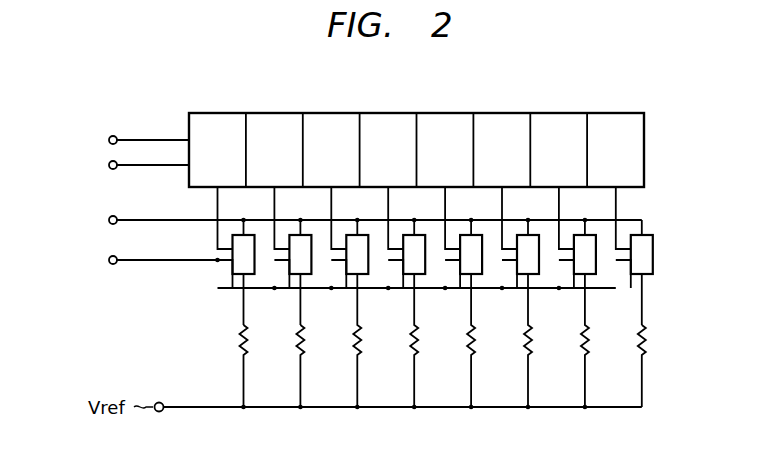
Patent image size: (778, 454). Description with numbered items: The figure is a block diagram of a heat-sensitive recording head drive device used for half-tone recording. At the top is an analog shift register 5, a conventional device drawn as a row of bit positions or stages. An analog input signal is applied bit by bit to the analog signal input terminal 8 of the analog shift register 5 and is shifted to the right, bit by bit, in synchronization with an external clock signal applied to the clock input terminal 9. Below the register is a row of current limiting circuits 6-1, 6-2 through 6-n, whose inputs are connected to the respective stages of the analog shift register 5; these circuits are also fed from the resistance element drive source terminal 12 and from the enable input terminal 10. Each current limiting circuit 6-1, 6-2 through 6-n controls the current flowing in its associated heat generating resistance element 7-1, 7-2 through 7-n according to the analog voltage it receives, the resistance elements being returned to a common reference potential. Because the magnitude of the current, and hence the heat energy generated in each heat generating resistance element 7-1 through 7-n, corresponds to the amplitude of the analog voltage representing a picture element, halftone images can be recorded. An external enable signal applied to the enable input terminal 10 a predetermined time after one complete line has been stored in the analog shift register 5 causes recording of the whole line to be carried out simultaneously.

The analog shift register 5 is at (559, 112).
The analog signal input terminal 8 is at (108, 140).
The clock input terminal 9 is at (108, 165).
The enable input terminal 10 is at (108, 260).
The resistance element drive source terminal 12 is at (108, 220).
The current limiting circuit 6-1 is at (232, 272).
The current limiting circuit 6-2 is at (297, 276).
The current limiting circuit 6-n is at (654, 253).
The heat generating resistance element 7-1 is at (242, 342).
The heat generating resistance element 7-2 is at (298, 342).
The heat generating resistance element 7-n is at (648, 338).